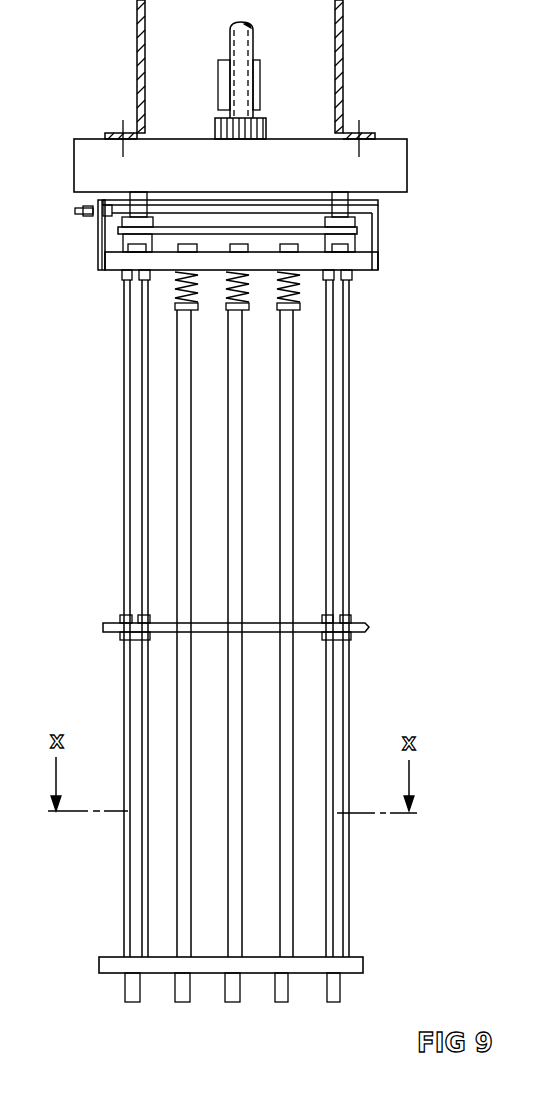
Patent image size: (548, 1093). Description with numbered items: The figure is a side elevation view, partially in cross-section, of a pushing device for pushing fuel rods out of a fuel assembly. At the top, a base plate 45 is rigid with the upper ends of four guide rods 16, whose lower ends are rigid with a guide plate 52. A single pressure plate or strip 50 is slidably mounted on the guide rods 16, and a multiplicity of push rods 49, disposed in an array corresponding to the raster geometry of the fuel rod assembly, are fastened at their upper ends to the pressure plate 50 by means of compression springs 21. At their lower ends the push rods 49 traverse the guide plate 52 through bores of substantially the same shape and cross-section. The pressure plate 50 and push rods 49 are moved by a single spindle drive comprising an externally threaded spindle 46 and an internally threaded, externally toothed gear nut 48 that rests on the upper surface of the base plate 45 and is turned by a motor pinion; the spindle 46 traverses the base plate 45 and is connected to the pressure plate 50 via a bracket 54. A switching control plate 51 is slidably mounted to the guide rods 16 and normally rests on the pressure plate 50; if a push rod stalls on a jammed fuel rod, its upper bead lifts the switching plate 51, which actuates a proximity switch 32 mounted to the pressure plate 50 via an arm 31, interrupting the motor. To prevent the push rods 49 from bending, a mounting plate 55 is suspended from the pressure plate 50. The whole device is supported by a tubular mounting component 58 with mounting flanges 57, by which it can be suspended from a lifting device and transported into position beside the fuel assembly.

The base plate 45 is at (86, 155).
The externally threaded spindle 46 is at (240, 44).
The gear nut 48 is at (217, 127).
The mounting flange 57 is at (124, 136).
The tubular mounting component 58 is at (343, 68).
The bracket 54 is at (378, 204).
The switching control plate 51 is at (357, 231).
The proximity switch 32 is at (93, 216).
The bracket or arm 31 is at (98, 262).
The pressure plate 50 is at (115, 263).
The compression springs 21 is at (283, 300).
The mounting plate 55 is at (369, 628).
The guide rods 16 is at (127, 876).
The guide plate 52 is at (413, 968).
The push rods 49 is at (227, 990).